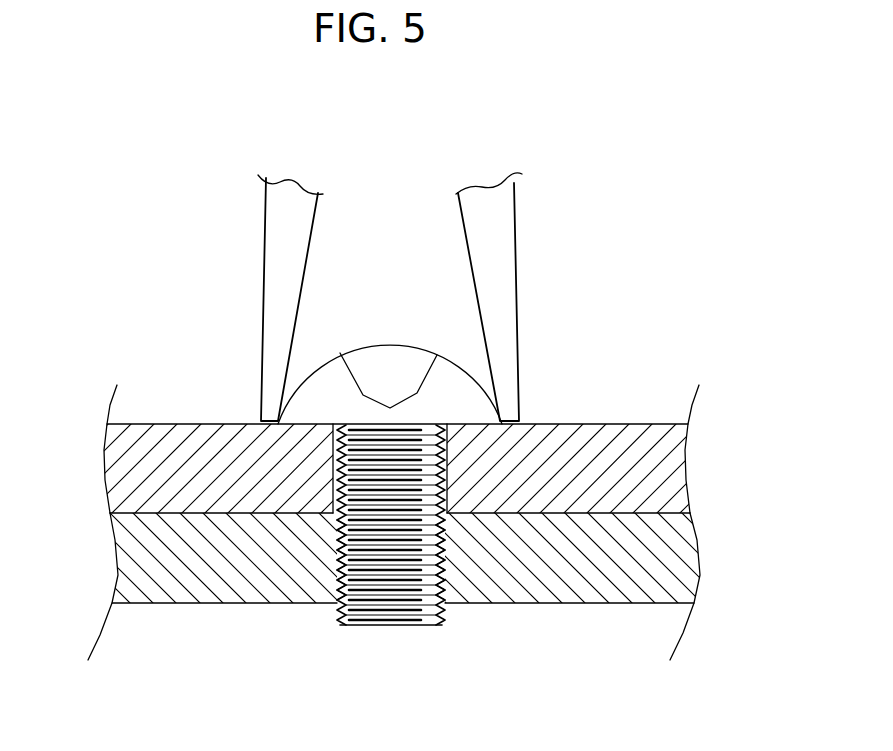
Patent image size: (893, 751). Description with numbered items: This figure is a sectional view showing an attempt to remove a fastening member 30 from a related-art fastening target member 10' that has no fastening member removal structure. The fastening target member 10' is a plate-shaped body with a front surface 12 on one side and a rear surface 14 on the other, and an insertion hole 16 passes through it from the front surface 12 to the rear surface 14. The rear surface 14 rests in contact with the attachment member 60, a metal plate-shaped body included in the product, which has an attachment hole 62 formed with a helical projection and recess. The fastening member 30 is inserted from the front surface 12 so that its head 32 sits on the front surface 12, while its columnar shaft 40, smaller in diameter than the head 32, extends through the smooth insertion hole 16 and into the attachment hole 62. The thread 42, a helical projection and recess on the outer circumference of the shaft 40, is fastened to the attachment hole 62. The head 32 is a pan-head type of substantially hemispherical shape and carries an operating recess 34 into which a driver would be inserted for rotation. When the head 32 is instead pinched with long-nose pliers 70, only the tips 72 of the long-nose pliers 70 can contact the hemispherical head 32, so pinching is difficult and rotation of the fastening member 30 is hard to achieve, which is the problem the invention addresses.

The fastening target member 10' is at (405, 499).
The front surface 12 is at (393, 400).
The rear surface 14 is at (405, 618).
The insertion hole 16 is at (443, 424).
The fastening member 30 is at (389, 489).
The head 32 is at (390, 336).
The operating recess 34 is at (382, 355).
The shaft 40 is at (360, 570).
The thread 42 is at (337, 607).
The attachment member 60 is at (225, 603).
The attachment hole 62 is at (445, 513).
The long-nose pliers 70 is at (411, 297).
The tips 72 is at (280, 405).